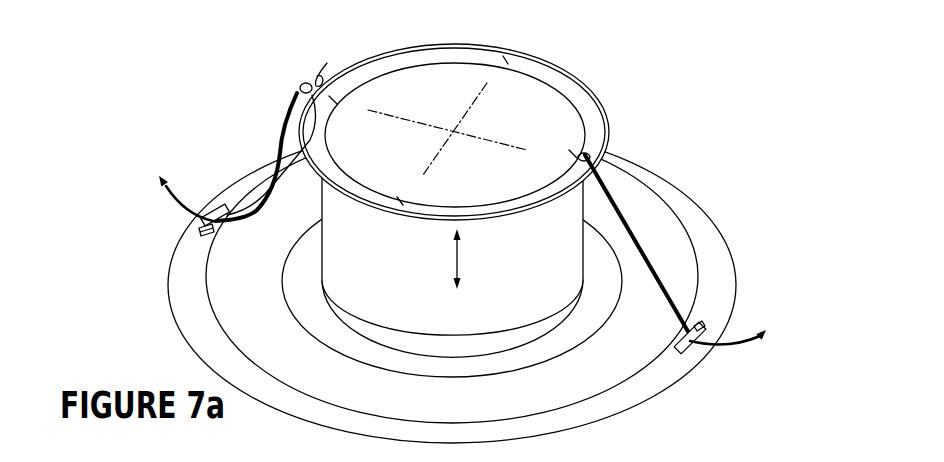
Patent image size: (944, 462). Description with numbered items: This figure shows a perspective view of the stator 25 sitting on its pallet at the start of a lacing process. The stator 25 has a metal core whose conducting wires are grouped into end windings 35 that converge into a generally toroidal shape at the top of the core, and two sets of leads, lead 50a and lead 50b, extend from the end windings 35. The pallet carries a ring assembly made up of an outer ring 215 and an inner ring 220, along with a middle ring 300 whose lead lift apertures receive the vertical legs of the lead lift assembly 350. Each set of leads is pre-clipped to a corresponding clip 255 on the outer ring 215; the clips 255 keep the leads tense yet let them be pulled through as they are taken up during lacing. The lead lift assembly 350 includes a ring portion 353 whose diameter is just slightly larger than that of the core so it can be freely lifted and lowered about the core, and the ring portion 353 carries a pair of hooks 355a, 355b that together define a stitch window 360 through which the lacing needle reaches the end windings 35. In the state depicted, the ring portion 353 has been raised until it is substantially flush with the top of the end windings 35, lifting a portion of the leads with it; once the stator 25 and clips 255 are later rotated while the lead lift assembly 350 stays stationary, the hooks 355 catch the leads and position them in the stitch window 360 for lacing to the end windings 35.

The lead lift assembly 350 is at (484, 117).
The ring portion 353 is at (358, 60).
The end windings 35 is at (567, 90).
The hook 355a is at (322, 63).
The hook 355b is at (300, 92).
The hooks 355 is at (283, 458).
The stitch window 360 is at (290, 70).
The lead 50a is at (282, 130).
The lead 50b is at (647, 255).
The stator 25 is at (632, 182).
The clip 255 is at (181, 246).
The outer ring 215 is at (657, 372).
The middle ring 300 is at (607, 367).
The inner ring 220 is at (500, 340).